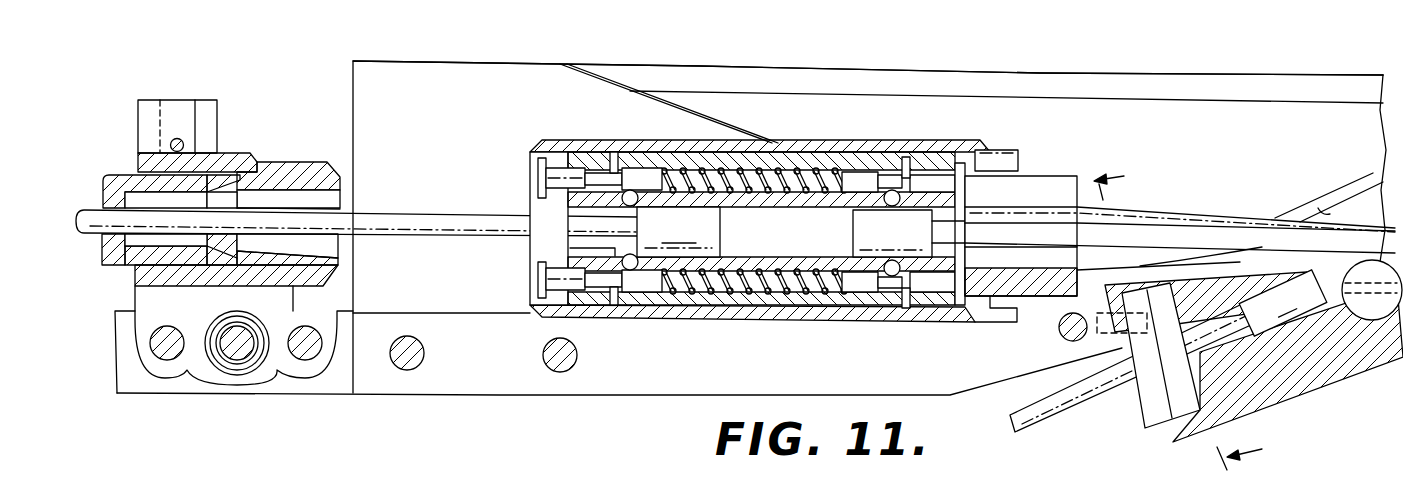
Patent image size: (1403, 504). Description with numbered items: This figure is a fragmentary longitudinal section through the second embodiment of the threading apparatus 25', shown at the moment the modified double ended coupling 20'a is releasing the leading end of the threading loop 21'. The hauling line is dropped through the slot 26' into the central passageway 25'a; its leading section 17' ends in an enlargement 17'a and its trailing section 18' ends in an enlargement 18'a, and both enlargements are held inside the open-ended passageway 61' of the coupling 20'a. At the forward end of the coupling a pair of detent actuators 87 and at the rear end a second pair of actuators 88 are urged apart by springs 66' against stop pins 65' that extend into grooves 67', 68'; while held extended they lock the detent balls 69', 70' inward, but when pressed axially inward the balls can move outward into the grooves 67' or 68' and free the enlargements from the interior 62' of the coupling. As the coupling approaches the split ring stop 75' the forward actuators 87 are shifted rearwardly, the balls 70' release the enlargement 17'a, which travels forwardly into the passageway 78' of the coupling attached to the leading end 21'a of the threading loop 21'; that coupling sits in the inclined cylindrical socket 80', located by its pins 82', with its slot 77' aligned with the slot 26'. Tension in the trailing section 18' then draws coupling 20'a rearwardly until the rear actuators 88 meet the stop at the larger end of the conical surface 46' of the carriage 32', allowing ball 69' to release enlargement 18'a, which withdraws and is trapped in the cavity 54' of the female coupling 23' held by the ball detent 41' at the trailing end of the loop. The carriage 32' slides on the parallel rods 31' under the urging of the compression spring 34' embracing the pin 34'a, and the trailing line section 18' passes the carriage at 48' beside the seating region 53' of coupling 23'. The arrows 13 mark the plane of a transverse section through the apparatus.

The section line 13- 13 is at (1197, 316).
The leading section of the hauling line 17' is at (1163, 236).
The enlargement 17'a is at (892, 233).
The trailing section of the hauling line 18' is at (356, 202).
The enlargement 18'a is at (678, 232).
The double ended coupling 20'a is at (760, 255).
The threading loop 21' is at (1136, 378).
The shaft block 21'a is at (1320, 298).
The female coupling 23' is at (157, 170).
The threading apparatus 25' is at (619, 395).
The central passageway 25'a is at (868, 53).
The slot 26' is at (971, 264).
The parallel rods 31' is at (247, 382).
The carriage 32' is at (211, 329).
The compression spring 34' is at (225, 375).
The pin 34'a is at (253, 381).
The ball detent 41' is at (177, 113).
The conical surface 46' is at (289, 193).
The shaft section 48' is at (288, 152).
The spacer 53' is at (200, 189).
The cavity 54' is at (137, 260).
The central open-ended passageway 61' is at (537, 257).
The spring chamber 62' is at (761, 231).
The stop pins 65' is at (781, 271).
The springs 66' is at (761, 236).
The grooves 67' is at (603, 226).
The grooves 68' is at (902, 238).
The detent balls 69' is at (604, 230).
The detent balls 70' is at (852, 233).
The split ring stop 75' is at (980, 267).
The slot 77' is at (1329, 182).
The passageway 78' is at (1180, 216).
The cylindrical socket 80' is at (1308, 179).
The locator pins 82' is at (1073, 340).
The detent actuators 87 is at (966, 190).
The detent actuators 88 is at (537, 172).